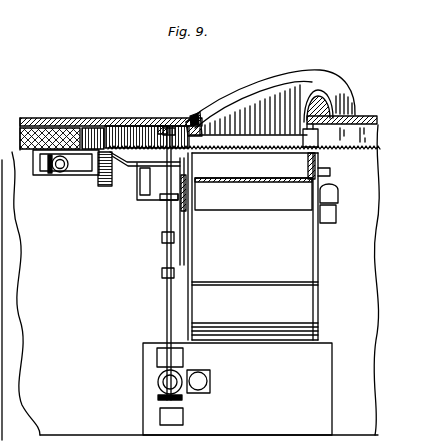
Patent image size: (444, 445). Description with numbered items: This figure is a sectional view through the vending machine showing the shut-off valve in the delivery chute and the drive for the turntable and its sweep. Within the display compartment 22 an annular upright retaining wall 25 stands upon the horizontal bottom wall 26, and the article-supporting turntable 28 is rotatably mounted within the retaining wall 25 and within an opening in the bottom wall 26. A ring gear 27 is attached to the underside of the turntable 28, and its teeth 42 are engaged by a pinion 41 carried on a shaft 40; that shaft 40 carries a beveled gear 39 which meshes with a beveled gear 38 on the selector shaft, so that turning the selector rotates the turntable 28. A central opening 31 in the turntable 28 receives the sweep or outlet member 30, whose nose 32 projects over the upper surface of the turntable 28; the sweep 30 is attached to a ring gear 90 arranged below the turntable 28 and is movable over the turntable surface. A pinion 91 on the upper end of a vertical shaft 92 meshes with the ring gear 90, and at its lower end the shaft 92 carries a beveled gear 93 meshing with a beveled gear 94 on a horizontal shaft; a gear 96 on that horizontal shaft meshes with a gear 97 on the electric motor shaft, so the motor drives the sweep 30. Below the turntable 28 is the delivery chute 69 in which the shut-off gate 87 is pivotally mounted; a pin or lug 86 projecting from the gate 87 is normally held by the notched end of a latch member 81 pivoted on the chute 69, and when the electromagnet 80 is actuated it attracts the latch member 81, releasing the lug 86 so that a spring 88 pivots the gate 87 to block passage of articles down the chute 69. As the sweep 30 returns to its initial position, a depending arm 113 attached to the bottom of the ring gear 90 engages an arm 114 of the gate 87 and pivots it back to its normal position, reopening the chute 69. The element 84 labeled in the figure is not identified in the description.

The display compartment 22 is at (0, 101).
The annular upright retaining wall 25 is at (2, 236).
The horizontal bottom wall 26 is at (0, 122).
The ring gear 27 is at (115, 136).
The article-supporting turntable 28 is at (62, 120).
The turntable sweep 30 is at (228, 97).
The central opening 31 is at (330, 115).
The nose portion 32 is at (352, 107).
The beveled gear 38 is at (57, 176).
The beveled gear 39 is at (50, 170).
The shaft 40 is at (83, 175).
The pinion 41 is at (104, 186).
The teeth 42 is at (115, 151).
The delivery chute 69 is at (305, 316).
The electromagnet 80 is at (336, 190).
The latch member 81 is at (326, 210).
The corner joint 84 is at (196, 119).
The pin or lug 86 is at (324, 172).
The shut-off gate 87 is at (263, 206).
The spring 88 is at (186, 198).
The ring gear 90 is at (197, 129).
The pinion 91 is at (161, 128).
The vertical shaft 92 is at (167, 214).
The beveled gear 93 is at (163, 400).
The beveled gear 94 is at (157, 380).
The gear 96 is at (191, 377).
The gear 97 is at (210, 381).
The depending arm 113 is at (303, 137).
The arm 114 is at (305, 149).